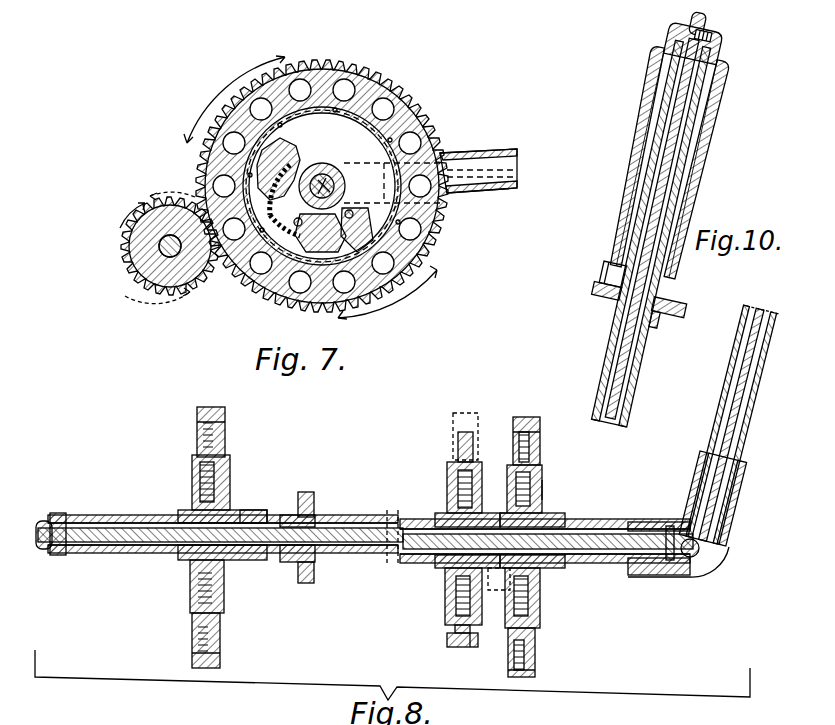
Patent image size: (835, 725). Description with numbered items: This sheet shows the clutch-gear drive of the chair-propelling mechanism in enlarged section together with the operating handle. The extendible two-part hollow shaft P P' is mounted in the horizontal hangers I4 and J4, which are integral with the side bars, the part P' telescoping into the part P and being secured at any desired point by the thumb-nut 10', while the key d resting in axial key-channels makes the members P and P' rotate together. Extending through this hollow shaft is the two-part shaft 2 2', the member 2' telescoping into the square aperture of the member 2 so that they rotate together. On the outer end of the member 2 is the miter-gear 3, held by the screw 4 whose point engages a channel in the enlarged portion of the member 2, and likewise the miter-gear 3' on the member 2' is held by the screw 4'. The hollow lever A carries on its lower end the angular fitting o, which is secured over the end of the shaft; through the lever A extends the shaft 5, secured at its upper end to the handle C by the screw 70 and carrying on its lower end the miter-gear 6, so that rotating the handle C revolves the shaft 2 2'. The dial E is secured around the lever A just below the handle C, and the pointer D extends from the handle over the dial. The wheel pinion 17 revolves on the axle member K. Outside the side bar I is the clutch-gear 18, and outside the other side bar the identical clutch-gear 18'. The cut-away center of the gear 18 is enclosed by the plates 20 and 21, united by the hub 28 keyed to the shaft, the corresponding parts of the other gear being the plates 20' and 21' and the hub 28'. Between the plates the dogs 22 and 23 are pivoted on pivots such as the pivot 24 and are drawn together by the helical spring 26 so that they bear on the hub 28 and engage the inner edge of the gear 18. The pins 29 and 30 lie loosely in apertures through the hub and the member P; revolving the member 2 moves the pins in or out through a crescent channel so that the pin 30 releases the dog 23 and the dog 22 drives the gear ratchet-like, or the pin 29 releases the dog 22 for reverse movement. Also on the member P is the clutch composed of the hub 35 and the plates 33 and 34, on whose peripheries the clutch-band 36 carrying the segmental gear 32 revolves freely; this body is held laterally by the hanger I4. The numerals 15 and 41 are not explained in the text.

In FIG. 7, the clutch-gear 18 is at (322, 186).
In FIG. 8, the clutch-gear 18 is at (538, 536).
In FIG. 7, the hollow shaft member P is at (336, 186).
In FIG. 8, the hollow shaft member P is at (523, 543).
In FIG. 7, the extendible shaft member 2 is at (343, 189).
In FIG. 8, the extendible shaft member 2 is at (548, 568).
In FIG. 7, the dog 23 is at (280, 150).
In FIG. 7, the ratchet 15 is at (300, 152).
In FIG. 7, the pin 30 is at (285, 217).
In FIG. 7, the pin 29 is at (301, 218).
In FIG. 7, the helical spring 26 is at (297, 232).
In FIG. 7, the dog 22 is at (358, 230).
In FIG. 7, the pivot 24 is at (352, 214).
In FIG. 7, the side bar I is at (492, 152).
In FIG. 7, the axle member K is at (150, 243).
In FIG. 7, the pinion 17 is at (142, 266).
In FIG. 10, the screw 70 is at (727, 36).
In FIG. 10, the handle C is at (661, 73).
In FIG. 10, the lever A is at (682, 372).
In FIG. 8, the lever A is at (724, 388).
In FIG. 10, the pointer D is at (600, 261).
In FIG. 10, the dial E is at (655, 302).
In FIG. 10, the shaft 5 is at (606, 435).
In FIG. 8, the shaft 5 is at (763, 310).
In FIG. 8, the hollow shaft member P' is at (223, 520).
In FIG. 8, the extendible shaft member 2' is at (220, 557).
In FIG. 8, the miter-gear 3' is at (39, 517).
In FIG. 8, the screw 4' is at (61, 521).
In FIG. 8, the hub 28' is at (208, 521).
In FIG. 8, the horizontal hanger J4 is at (250, 510).
In FIG. 8, the plate 21' is at (197, 534).
In FIG. 8, the plate 20' is at (226, 532).
In FIG. 8, the clutch-gear 18' is at (190, 530).
In FIG. 8, the thumb-nut 10' is at (325, 540).
In FIG. 8, the key d is at (318, 516).
In FIG. 8, the segmental gear 32 is at (466, 413).
In FIG. 8, the plate 33 is at (478, 472).
In FIG. 8, the plate 34 is at (450, 470).
In FIG. 8, the hub 35 is at (446, 514).
In FIG. 8, the clutch-band 36 is at (463, 648).
In FIG. 8, the pin 41 is at (479, 640).
In FIG. 8, the plate 21 is at (515, 546).
In FIG. 8, the horizontal hanger I4 is at (506, 514).
In FIG. 8, the plate 20 is at (558, 486).
In FIG. 8, the hub 28 is at (544, 526).
In FIG. 8, the angular fitting o is at (666, 576).
In FIG. 8, the screw 4 is at (669, 526).
In FIG. 8, the miter-gear 3 is at (705, 564).
In FIG. 8, the miter-gear 6 is at (722, 546).